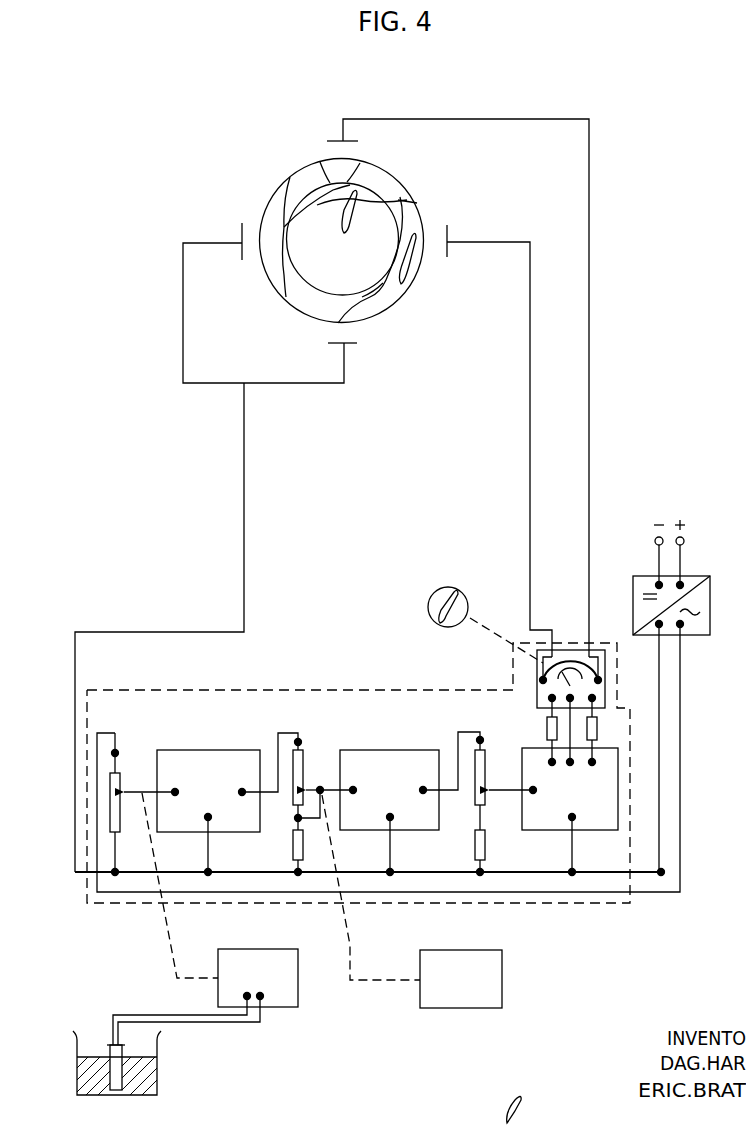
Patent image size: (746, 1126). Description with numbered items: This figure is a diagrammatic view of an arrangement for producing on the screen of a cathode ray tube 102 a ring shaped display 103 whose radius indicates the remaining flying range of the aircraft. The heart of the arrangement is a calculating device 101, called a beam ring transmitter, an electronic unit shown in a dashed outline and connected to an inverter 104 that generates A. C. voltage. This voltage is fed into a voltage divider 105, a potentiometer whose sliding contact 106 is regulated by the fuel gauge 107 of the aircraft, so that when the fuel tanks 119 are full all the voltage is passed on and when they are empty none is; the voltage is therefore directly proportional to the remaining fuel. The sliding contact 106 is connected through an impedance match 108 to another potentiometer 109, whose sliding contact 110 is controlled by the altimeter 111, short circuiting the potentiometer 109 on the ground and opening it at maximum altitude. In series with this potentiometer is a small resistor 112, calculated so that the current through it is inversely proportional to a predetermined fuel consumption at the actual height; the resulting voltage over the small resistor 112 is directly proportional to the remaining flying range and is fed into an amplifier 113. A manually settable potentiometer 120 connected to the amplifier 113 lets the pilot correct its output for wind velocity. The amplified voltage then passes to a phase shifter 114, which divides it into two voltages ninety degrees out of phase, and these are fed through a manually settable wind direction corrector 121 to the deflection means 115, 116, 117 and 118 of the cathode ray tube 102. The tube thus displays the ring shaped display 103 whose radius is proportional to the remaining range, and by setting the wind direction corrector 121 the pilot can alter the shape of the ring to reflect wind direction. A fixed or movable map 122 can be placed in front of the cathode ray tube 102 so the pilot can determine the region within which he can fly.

The calculating device 101 is at (545, 907).
The cathode ray tube 102 is at (418, 202).
The ring shaped display 103 is at (365, 192).
The inverter 104 is at (708, 632).
The voltage divider 105 is at (121, 828).
The sliding contact 106 is at (149, 779).
The fuel gauge 107 is at (205, 919).
The impedance match 108 is at (208, 813).
The potentiometer 109 is at (293, 792).
The sliding contact 110 is at (325, 792).
The altimeter 111 is at (412, 901).
The small resistor 112 is at (302, 836).
The amplifier 113 is at (389, 813).
The phase shifter 114 is at (570, 787).
The deflection means 115 is at (337, 140).
The deflection means 116 is at (449, 240).
The deflection means 117 is at (346, 343).
The deflection means 118 is at (241, 241).
The fuel tanks 119 is at (158, 1072).
The manually settable potentiometer 120 is at (478, 804).
The wind direction corrector 121 is at (542, 677).
The map 122 is at (393, 293).